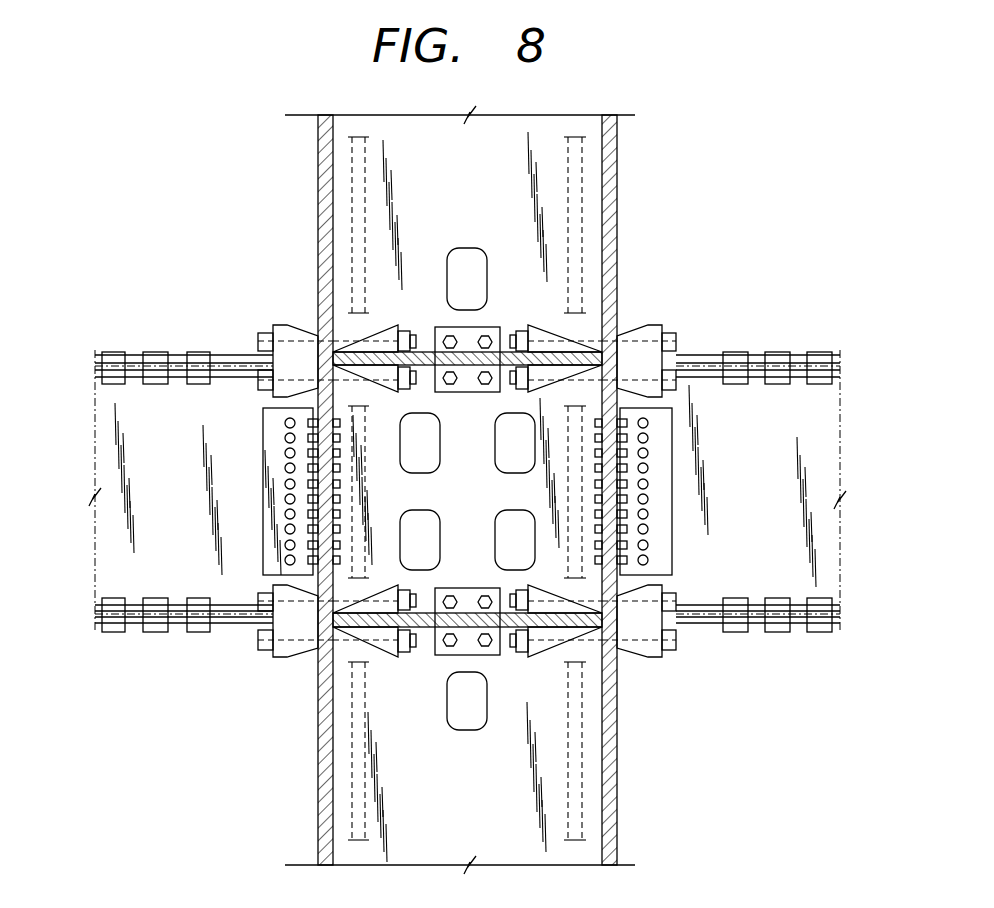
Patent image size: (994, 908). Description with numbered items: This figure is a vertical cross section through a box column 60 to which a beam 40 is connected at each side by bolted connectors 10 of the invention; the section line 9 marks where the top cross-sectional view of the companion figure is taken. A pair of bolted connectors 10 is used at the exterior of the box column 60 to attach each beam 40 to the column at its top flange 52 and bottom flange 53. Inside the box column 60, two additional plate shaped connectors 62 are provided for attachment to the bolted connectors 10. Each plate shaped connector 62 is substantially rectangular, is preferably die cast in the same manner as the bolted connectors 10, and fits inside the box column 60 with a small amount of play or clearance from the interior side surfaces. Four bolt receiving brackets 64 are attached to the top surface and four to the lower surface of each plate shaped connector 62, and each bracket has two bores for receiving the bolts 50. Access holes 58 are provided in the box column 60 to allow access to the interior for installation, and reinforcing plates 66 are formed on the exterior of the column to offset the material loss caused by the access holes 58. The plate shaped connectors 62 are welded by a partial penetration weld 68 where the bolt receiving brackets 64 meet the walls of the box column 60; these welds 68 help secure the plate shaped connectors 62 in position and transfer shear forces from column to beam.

The section line 9— 9 is at (293, 152).
The bolted connector 10 is at (256, 276).
The beam 40 is at (112, 432).
The bolt 50 is at (485, 595).
The top flange 52 is at (840, 357).
The bottom flange 53 is at (840, 612).
The access hole 58 is at (467, 733).
The box column 60 is at (552, 282).
The plate shaped connector 62 is at (438, 350).
The bolt receiving bracket 64 is at (372, 323).
The reinforcing plate 66 is at (352, 212).
The partial penetration weld 68 is at (338, 612).